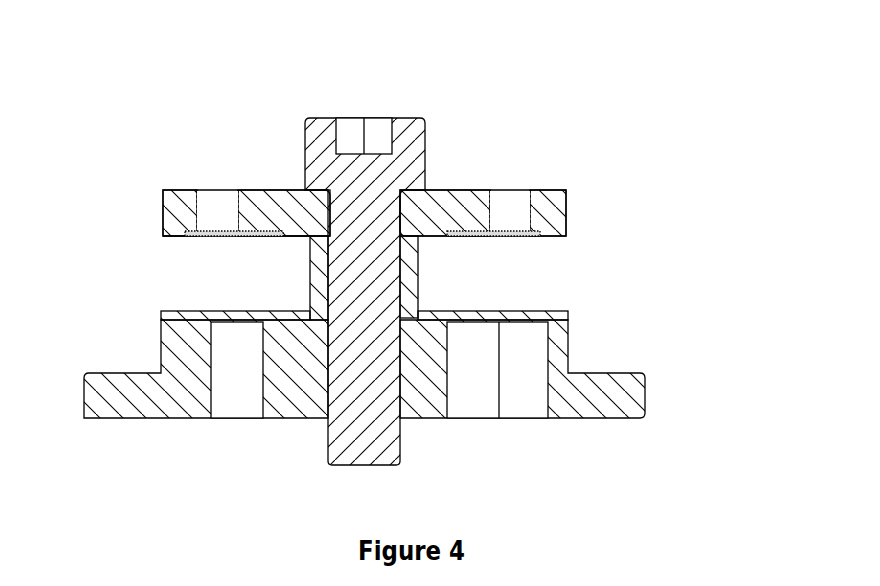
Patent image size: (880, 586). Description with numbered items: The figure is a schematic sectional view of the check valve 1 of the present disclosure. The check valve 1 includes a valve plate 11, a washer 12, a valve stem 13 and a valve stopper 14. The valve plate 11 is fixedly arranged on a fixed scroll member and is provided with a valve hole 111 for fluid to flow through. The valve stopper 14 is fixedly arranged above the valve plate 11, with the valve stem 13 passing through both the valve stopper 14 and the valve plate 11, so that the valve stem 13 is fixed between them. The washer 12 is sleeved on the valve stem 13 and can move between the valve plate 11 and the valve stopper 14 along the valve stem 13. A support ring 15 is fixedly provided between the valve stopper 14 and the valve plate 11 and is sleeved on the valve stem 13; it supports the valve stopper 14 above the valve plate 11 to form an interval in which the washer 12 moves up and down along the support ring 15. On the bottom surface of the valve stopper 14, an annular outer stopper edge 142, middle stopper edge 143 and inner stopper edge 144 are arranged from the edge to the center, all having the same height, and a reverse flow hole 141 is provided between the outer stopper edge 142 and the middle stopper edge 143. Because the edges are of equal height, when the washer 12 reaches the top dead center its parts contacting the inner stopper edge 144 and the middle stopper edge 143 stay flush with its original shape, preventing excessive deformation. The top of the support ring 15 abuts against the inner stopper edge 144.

The check valve 1 is at (230, 82).
The valve plate 11 is at (645, 395).
The valve hole 111 is at (514, 405).
The washer 12 is at (567, 311).
The valve stem 13 is at (405, 155).
The valve stopper 14 is at (262, 190).
The reverse flow hole 141 is at (521, 186).
The outer stopper edge 142 is at (166, 236).
The middle stopper edge 143 is at (246, 237).
The inner stopper edge 144 is at (298, 237).
The support ring 15 is at (408, 271).